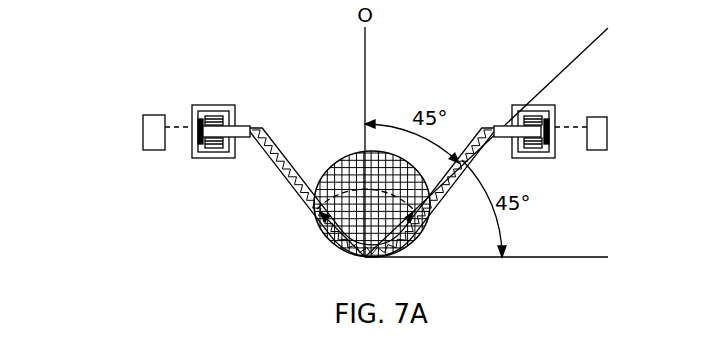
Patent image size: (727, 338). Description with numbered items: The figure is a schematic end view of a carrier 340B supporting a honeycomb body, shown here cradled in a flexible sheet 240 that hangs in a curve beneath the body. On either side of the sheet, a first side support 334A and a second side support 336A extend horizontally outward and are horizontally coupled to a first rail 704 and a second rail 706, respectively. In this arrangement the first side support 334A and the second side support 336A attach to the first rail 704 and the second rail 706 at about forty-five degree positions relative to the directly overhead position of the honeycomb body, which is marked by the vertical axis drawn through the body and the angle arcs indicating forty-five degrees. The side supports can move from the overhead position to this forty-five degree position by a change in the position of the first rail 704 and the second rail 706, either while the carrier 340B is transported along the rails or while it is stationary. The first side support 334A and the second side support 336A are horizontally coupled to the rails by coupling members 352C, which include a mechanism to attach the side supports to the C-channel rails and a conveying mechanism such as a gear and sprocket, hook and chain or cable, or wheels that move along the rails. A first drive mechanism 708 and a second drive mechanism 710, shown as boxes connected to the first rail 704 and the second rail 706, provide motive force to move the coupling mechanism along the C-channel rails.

The flexible sheet 240 is at (275, 170).
The first side support 334A is at (230, 137).
The second side support 336A is at (505, 133).
The carrier 340B is at (357, 122).
The coupling member 352C is at (557, 90).
The first rail 704 is at (207, 155).
The second rail 706 is at (537, 160).
The first drive mechanism 708 is at (152, 125).
The second drive mechanism 710 is at (597, 135).